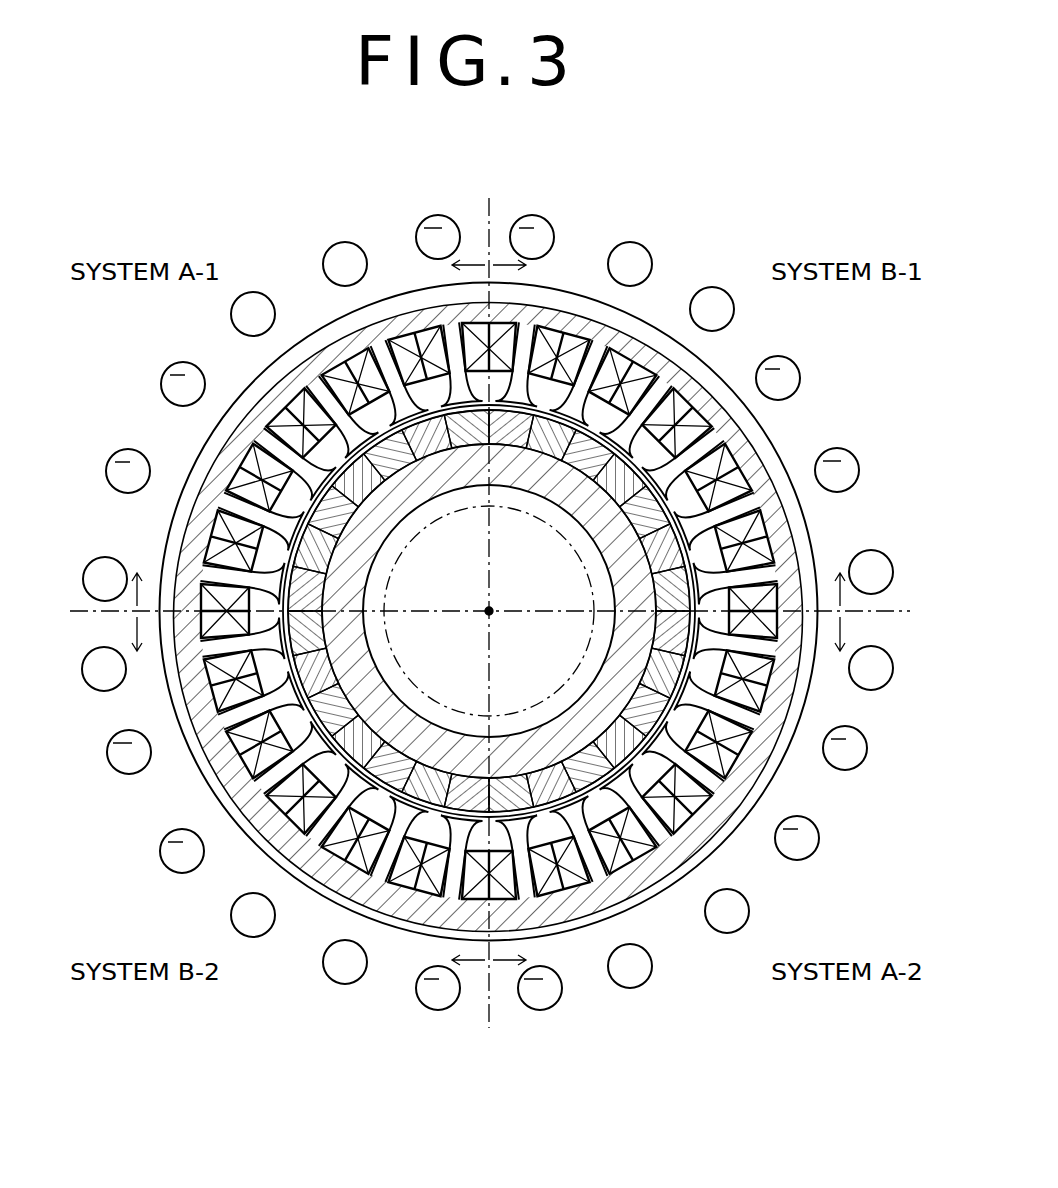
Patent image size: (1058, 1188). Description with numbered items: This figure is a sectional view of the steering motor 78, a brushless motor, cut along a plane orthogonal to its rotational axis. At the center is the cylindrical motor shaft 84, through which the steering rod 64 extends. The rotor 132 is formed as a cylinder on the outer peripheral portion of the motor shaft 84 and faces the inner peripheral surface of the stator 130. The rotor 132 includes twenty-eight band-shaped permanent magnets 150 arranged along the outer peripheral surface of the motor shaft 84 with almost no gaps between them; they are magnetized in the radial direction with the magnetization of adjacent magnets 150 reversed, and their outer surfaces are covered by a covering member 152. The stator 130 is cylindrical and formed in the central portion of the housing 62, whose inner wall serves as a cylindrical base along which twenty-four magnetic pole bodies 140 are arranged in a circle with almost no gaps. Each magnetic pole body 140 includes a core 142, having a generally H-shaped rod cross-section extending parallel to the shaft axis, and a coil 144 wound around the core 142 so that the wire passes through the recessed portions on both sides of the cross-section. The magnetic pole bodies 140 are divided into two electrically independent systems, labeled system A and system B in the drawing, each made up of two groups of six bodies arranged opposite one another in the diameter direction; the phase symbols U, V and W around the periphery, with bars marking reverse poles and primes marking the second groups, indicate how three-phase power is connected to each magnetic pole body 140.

The housing 62 is at (599, 318).
The steering rod 64 is at (477, 530).
The steering motor 78 is at (728, 242).
The motor shaft 84 is at (190, 575).
The stator 130 is at (725, 357).
The rotor 132 is at (667, 780).
The magnetic pole body 140 is at (792, 462).
The core 142 is at (750, 503).
The coil 144 is at (763, 542).
The permanent magnet 150 is at (468, 797).
The covering member 152 is at (343, 793).